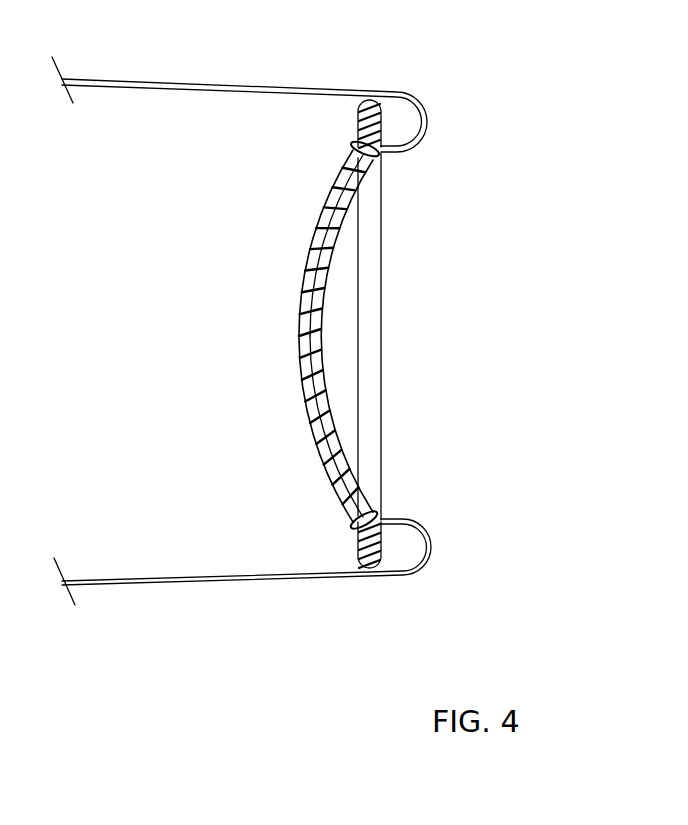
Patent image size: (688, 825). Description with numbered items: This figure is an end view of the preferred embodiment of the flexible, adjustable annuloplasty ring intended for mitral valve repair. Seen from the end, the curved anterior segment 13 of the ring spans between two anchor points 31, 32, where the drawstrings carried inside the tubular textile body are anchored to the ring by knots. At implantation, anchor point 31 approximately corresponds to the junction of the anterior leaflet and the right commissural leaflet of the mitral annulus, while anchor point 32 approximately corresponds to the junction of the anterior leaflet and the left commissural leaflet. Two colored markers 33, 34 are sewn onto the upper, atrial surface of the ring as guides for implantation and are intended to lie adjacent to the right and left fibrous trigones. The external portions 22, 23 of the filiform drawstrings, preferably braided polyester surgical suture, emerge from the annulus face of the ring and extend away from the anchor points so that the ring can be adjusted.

The anterior segment 13 is at (300, 331).
The external portion 22 is at (183, 578).
The external portion 23 is at (158, 83).
The anchor point 31 is at (378, 508).
The anchor point 32 is at (378, 163).
The colored marker 33 is at (338, 490).
The colored marker 34 is at (337, 180).